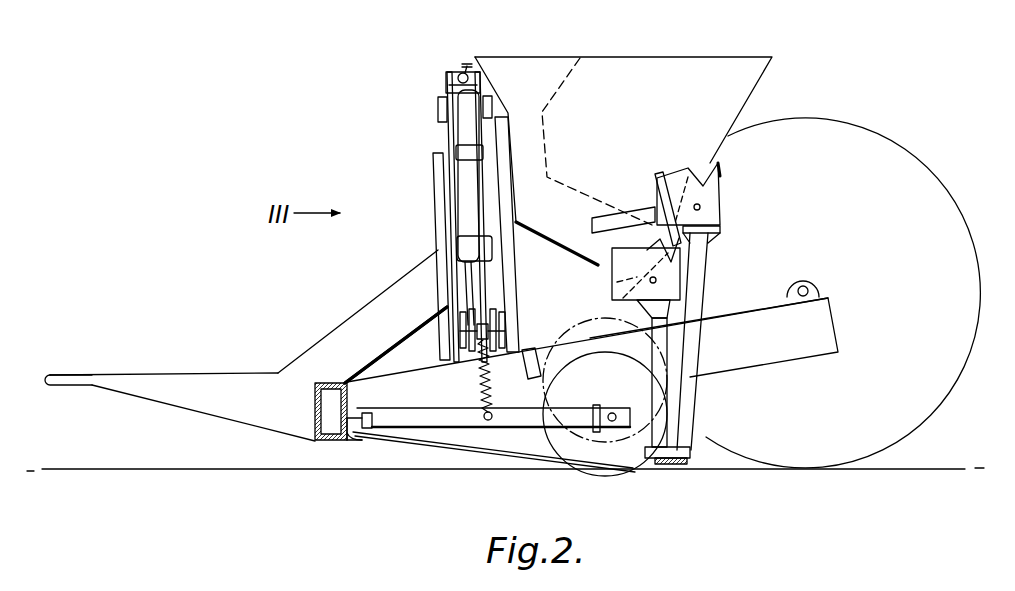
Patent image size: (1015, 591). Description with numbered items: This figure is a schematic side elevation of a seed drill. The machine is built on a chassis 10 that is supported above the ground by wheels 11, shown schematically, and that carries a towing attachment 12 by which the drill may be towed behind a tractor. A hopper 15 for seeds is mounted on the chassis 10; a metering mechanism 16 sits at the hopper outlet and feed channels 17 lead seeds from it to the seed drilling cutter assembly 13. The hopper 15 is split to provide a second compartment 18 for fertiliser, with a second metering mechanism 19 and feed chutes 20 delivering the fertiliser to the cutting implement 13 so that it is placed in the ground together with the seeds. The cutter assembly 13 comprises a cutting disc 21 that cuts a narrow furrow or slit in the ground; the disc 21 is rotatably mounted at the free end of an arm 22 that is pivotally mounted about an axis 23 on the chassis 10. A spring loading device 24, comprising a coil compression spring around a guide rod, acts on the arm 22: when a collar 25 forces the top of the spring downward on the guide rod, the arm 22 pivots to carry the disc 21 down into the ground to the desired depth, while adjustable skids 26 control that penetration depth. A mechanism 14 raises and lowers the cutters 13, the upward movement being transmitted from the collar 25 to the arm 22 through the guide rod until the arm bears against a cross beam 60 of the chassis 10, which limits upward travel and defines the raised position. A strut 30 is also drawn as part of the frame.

The chassis 10 is at (797, 332).
The wheels 11 is at (935, 190).
The towing attachment 12 is at (70, 378).
The seed drilling cutter assembly 13 is at (620, 456).
The raising and lowering mechanism 14 is at (436, 146).
The hopper 15 is at (756, 92).
The metering mechanism 16 is at (712, 213).
The feed channels 17 is at (700, 272).
The second compartment 18 is at (532, 82).
The second metering mechanism 19 is at (663, 292).
The feed chutes 20 is at (658, 400).
The cutting disc 21 is at (598, 476).
The arm 22 is at (418, 415).
The axis 23 is at (366, 430).
The spring loading device 24 is at (480, 372).
The collar 25 is at (470, 332).
The skids 26 is at (667, 465).
The frame strut 30 is at (450, 340).
The cross beam 60 is at (530, 349).